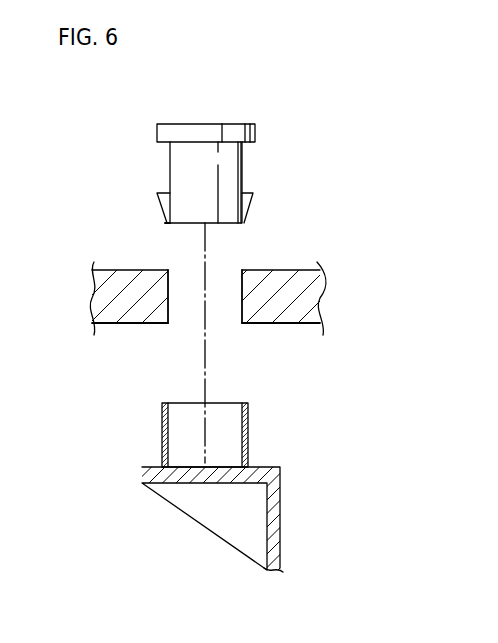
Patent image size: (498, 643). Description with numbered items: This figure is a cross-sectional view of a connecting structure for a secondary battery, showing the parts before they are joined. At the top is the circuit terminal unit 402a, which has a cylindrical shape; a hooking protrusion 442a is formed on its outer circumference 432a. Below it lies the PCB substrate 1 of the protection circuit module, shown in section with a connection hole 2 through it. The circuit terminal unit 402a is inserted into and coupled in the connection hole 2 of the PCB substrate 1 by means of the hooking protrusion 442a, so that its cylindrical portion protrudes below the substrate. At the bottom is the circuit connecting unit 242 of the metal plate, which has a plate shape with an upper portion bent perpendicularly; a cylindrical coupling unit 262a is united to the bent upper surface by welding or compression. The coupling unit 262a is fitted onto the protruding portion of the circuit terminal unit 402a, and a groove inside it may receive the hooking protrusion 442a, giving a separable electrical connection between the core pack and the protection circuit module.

The circuit terminal unit 402a is at (274, 131).
The outer circumference 432a is at (243, 165).
The hooking protrusion 442a is at (158, 201).
The PCB substrate 1 is at (305, 280).
The connection hole 2 is at (225, 308).
The coupling unit 262a is at (249, 423).
The circuit connecting unit 242 is at (280, 507).